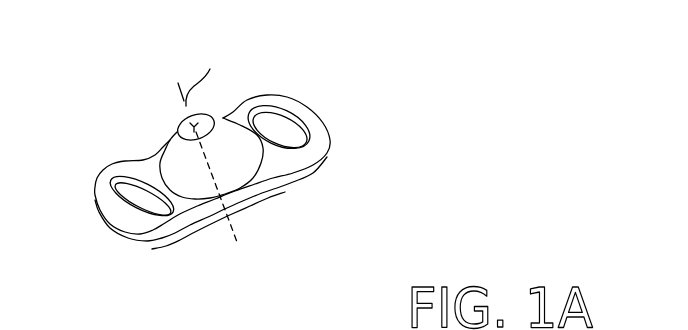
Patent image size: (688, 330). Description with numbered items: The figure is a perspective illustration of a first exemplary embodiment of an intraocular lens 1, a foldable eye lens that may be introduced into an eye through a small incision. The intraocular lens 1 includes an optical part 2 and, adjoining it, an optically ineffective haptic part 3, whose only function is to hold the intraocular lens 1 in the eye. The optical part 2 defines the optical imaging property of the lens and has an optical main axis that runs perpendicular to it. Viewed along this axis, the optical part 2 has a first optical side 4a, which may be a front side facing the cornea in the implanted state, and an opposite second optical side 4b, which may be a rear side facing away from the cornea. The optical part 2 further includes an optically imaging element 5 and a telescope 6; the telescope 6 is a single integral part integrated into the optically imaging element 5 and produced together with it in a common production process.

The intraocular lens 1 is at (213, 151).
The optical part 2 is at (237, 195).
The haptic part 3 is at (90, 156).
The first optical side 4a is at (265, 166).
The second optical side 4b is at (208, 231).
The optically imaging element 5 is at (190, 182).
The telescope 6 is at (170, 130).